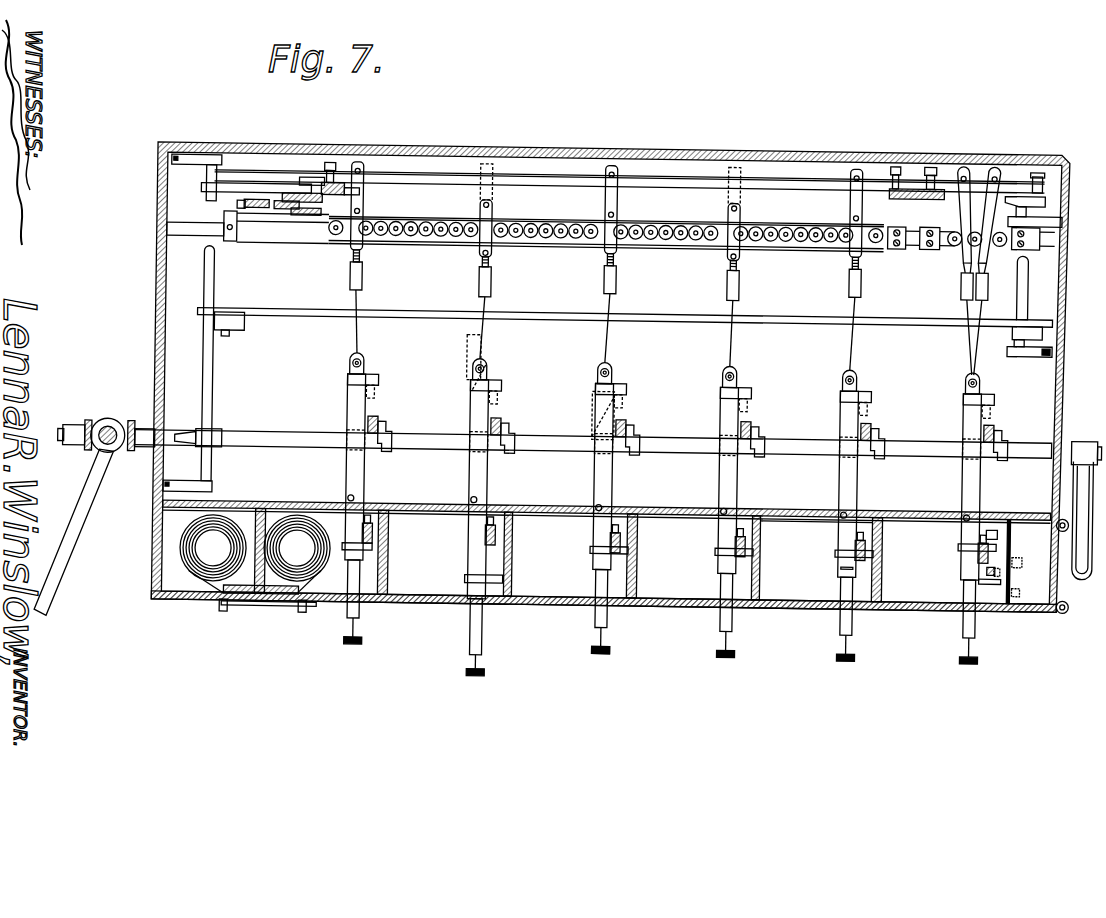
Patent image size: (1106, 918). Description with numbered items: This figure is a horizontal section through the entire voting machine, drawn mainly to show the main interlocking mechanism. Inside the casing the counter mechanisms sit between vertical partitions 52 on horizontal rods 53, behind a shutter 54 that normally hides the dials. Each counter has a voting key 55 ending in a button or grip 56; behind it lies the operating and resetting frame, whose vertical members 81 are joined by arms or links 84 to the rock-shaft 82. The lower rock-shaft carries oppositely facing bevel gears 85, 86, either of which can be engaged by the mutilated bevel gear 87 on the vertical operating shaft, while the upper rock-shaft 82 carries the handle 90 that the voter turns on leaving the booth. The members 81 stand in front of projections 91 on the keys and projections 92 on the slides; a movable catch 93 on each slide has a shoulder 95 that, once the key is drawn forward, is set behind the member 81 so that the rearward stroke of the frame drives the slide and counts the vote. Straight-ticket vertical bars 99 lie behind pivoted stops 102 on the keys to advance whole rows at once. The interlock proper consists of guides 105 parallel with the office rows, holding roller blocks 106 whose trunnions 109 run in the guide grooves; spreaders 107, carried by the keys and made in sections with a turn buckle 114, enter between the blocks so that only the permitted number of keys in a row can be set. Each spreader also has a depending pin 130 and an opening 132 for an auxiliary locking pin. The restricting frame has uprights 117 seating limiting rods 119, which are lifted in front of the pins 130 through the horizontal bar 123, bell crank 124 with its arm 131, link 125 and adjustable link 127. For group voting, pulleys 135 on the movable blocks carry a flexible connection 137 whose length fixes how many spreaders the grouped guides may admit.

The vertical partitions 52 is at (643, 550).
The horizontal rods 53 is at (812, 512).
The shutter 54 is at (783, 599).
The voting key 55 is at (850, 572).
The terminal button or grip 56 is at (609, 648).
The vertical bars or members 81 is at (382, 413).
The rock-shaft 82 is at (905, 432).
The arms or links 84 is at (763, 424).
The bevel gear 85 is at (90, 422).
The bevel gear 86 is at (134, 420).
The mutilated bevel gear 87 is at (110, 414).
The operating arm or handle 90 is at (1084, 430).
The projections 91 is at (378, 374).
The projections 92 is at (352, 428).
The movable catch 93 is at (500, 372).
The shoulder 95 is at (604, 398).
The vertical bars 99 is at (1010, 548).
The stops or projections 102 is at (509, 573).
The guides 105 is at (700, 242).
The blocks 106 is at (440, 220).
The spreaders 107 is at (742, 277).
The trunnions 109 is at (877, 233).
The turn buckle 114 is at (365, 276).
The uprights 117 is at (322, 181).
The limiting rods 119 is at (703, 178).
The horizontal bar 123 is at (535, 309).
The bell crank 124 is at (205, 188).
The link 125 is at (248, 182).
The link 127 is at (216, 432).
The depending pins 130 is at (494, 202).
The arm 131 is at (248, 322).
The opening 132 is at (619, 207).
The pulleys 135 is at (300, 214).
The flexible connection 137 is at (245, 238).